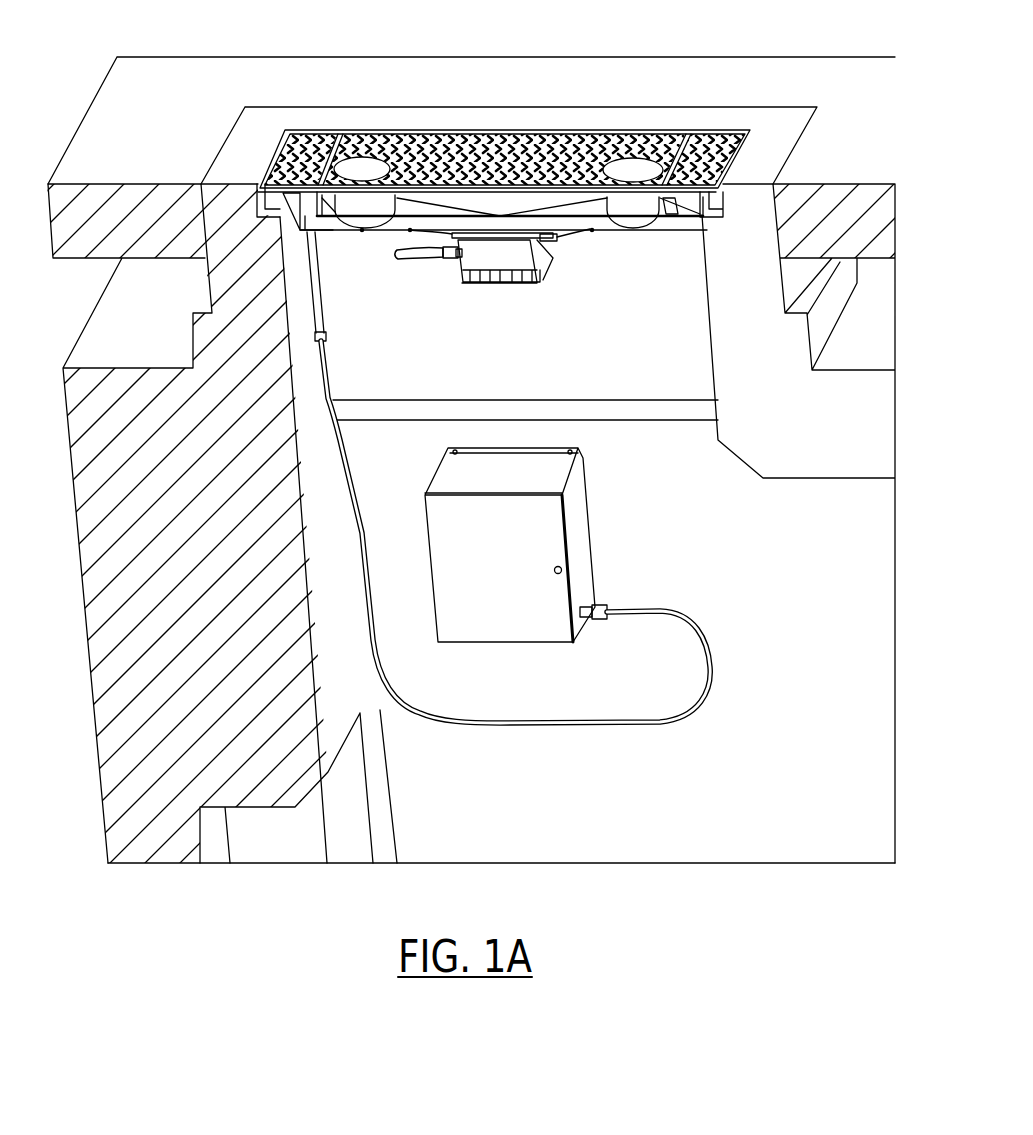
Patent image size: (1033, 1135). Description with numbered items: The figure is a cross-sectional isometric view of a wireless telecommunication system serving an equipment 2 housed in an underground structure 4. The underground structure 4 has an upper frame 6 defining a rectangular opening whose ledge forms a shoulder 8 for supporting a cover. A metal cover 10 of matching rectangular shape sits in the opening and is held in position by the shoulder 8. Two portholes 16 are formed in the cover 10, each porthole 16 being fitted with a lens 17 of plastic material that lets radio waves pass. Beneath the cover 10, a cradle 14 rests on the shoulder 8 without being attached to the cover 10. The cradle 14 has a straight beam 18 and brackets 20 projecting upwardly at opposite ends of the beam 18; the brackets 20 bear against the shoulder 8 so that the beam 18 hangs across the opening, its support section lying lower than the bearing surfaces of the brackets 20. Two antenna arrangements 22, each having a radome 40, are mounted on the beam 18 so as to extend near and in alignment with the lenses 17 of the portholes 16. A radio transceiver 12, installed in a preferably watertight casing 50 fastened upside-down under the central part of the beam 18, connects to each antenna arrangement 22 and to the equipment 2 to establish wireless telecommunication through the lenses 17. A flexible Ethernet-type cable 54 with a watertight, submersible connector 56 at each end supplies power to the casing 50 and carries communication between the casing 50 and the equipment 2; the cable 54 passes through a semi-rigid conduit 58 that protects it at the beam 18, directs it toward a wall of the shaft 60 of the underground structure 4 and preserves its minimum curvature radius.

The equipment 2 is at (596, 559).
The underground structure 4 is at (470, 471).
The upper frame 6 is at (747, 130).
The shoulder 8 is at (257, 220).
The metal cover 10 is at (410, 350).
The radio transceiver 12 is at (492, 289).
The cradle 14 is at (393, 236).
The portholes 16 is at (368, 158).
The lens 17 is at (348, 157).
The beam 18 is at (585, 226).
The brackets 20 is at (287, 240).
The antenna arrangements 22 is at (358, 242).
The radome 40 is at (353, 215).
The casing 50 is at (490, 267).
The cable 54 is at (462, 729).
The connector 56 is at (447, 260).
The semi-rigid conduit 58 is at (317, 290).
The shaft 60 is at (305, 358).